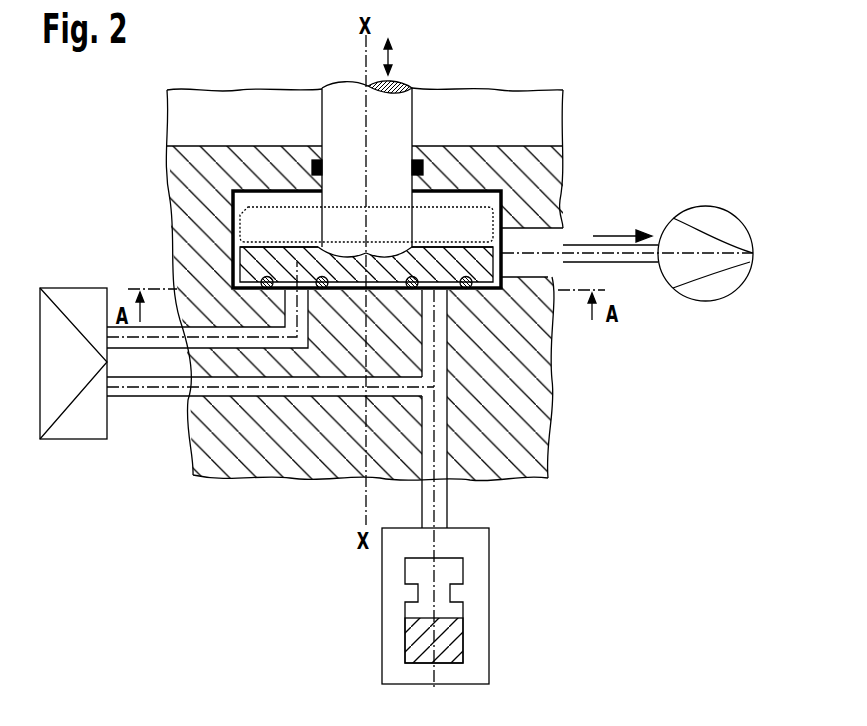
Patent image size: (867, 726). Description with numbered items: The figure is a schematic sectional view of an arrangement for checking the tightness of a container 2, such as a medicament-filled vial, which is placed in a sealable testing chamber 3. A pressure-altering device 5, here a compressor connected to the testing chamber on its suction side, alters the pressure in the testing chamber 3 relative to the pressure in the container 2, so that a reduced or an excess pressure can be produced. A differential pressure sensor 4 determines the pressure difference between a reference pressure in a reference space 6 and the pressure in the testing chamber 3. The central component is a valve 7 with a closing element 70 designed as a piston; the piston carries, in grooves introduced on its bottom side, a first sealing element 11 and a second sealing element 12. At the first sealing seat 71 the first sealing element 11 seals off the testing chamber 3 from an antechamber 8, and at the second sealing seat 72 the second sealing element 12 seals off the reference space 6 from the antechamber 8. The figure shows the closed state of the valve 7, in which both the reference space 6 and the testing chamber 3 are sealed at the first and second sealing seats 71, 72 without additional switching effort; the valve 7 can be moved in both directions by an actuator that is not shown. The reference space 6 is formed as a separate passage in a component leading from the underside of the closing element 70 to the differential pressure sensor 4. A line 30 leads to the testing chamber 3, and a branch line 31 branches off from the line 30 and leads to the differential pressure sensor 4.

The container 2 is at (455, 643).
The testing chamber 3 is at (482, 615).
The differential pressure sensor 4 is at (85, 300).
The pressure-altering device 5 is at (715, 218).
The reference space 6 is at (290, 340).
The valve 7 is at (158, 191).
The antechamber 8 is at (490, 200).
The first sealing element 11 is at (482, 265).
The second sealing element 12 is at (268, 272).
The line 30 is at (442, 435).
The branch line 31 is at (231, 392).
The closing element 70 is at (435, 287).
The first sealing seat 71 is at (468, 295).
The second sealing seat 72 is at (263, 295).